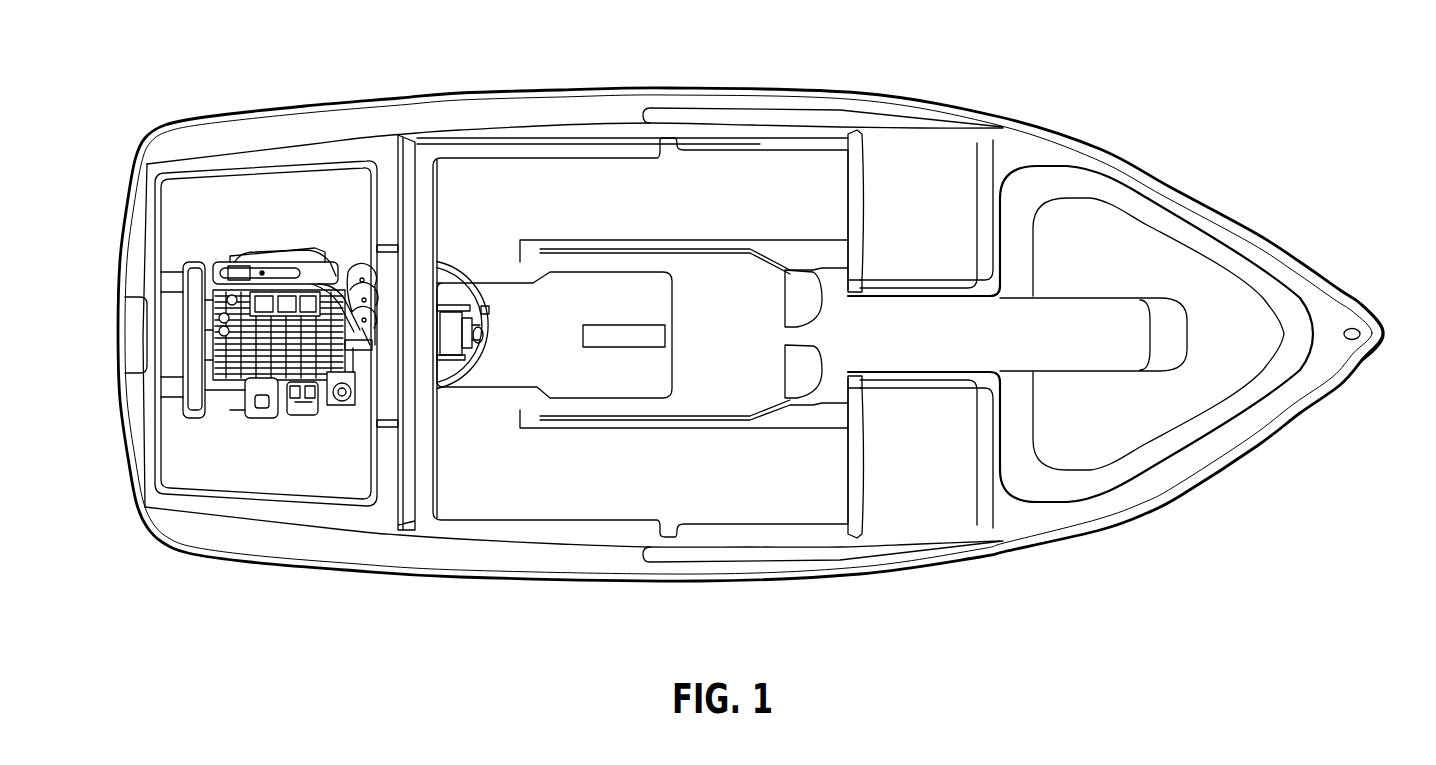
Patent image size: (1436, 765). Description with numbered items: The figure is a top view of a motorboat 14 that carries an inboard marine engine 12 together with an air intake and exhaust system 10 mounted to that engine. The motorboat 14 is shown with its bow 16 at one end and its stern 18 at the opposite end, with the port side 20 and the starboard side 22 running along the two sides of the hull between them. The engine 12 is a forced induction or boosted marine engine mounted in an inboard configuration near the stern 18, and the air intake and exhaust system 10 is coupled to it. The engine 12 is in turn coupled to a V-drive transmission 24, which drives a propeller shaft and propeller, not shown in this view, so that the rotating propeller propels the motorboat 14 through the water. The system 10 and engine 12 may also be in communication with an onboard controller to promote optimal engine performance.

The air intake and exhaust system 10 is at (359, 270).
The marine engine 12 is at (263, 247).
The motorboat 14 is at (751, 339).
The bow 16 is at (1386, 334).
The stern 18 is at (118, 337).
The port side 20 is at (668, 88).
The starboard side 22 is at (676, 584).
The V-drive transmission 24 is at (483, 338).